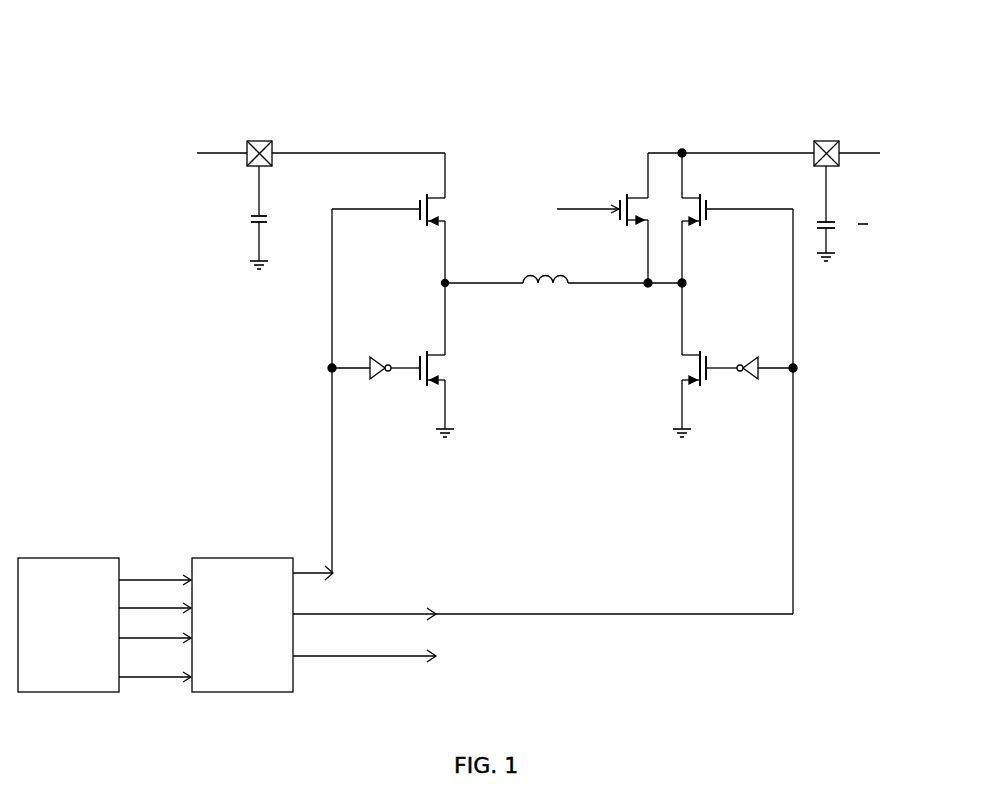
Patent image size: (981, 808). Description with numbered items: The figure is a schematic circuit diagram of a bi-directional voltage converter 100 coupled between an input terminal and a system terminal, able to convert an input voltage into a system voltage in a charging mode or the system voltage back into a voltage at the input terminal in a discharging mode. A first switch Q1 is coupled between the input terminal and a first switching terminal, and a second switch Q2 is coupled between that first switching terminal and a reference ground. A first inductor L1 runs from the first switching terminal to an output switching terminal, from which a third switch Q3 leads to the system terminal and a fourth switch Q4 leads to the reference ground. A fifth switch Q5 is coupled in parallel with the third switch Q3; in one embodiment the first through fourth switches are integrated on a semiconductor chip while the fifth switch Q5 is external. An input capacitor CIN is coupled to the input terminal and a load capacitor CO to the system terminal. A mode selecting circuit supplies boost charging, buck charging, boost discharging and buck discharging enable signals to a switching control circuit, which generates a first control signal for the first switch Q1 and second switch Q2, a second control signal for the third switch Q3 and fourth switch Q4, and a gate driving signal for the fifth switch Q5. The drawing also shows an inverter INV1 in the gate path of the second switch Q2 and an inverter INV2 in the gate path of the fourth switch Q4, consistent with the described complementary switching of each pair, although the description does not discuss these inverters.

The bi-directional voltage converter 100 is at (890, 61).
The first switch Q1 is at (388, 218).
The second switch Q2 is at (448, 360).
The third switch Q3 is at (737, 218).
The fourth switch Q4 is at (698, 360).
The fifth switch Q5 is at (602, 218).
The first inductor L1 is at (563, 269).
The input capacitor CIN is at (272, 217).
The load capacitor CO is at (815, 213).
The first inverter INV1 is at (376, 381).
The second inverter INV2 is at (749, 381).